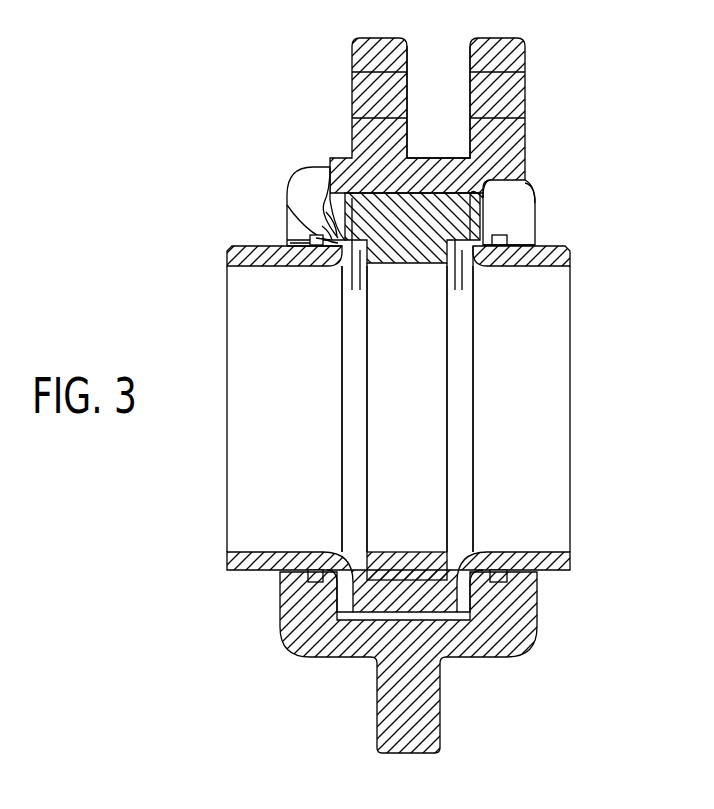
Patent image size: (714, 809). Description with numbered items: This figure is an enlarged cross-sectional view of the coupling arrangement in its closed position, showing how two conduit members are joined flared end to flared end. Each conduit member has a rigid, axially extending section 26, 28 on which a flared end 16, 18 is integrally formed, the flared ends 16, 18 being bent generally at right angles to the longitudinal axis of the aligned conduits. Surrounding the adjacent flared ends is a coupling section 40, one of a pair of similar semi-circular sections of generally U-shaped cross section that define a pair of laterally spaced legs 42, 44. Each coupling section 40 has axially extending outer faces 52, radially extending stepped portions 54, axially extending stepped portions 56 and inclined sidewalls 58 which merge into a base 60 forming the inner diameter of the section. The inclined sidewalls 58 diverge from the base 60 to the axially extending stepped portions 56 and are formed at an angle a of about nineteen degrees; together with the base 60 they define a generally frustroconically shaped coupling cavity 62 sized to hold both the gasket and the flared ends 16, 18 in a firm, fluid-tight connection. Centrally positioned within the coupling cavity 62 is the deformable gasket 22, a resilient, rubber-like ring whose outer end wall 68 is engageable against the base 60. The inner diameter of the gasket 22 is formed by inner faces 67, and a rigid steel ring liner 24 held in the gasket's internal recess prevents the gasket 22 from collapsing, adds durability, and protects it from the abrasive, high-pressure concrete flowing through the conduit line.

The flared end 16 is at (322, 208).
The flared end 18 is at (527, 177).
The deformable gasket 22 is at (447, 200).
The ring liner 24 is at (425, 254).
The axially extending section 26 is at (275, 258).
The axially extending section 28 is at (532, 257).
The coupling section 40 is at (538, 185).
The leg 42 is at (310, 240).
The leg 44 is at (538, 246).
The outer face 52 is at (305, 246).
The radially extending stepped portion 54 is at (316, 238).
The axially extending stepped portion 56 is at (322, 226).
The inclined sidewall 58 is at (326, 212).
The base 60 is at (330, 175).
The coupling cavity 62 is at (496, 200).
The inner face 67 is at (353, 272).
The outer end wall 68 is at (431, 200).
The angle a is at (480, 262).